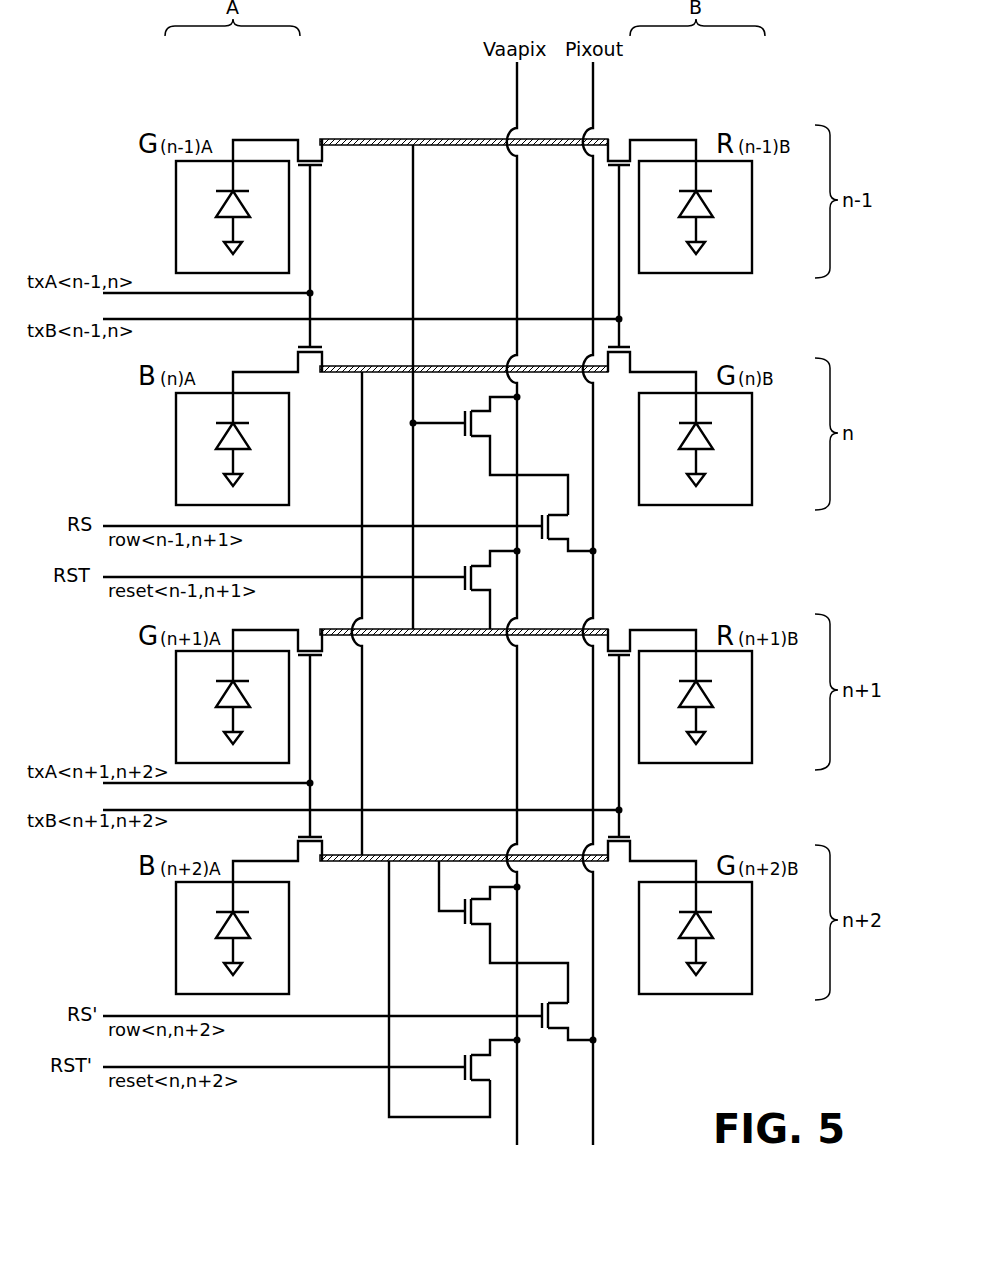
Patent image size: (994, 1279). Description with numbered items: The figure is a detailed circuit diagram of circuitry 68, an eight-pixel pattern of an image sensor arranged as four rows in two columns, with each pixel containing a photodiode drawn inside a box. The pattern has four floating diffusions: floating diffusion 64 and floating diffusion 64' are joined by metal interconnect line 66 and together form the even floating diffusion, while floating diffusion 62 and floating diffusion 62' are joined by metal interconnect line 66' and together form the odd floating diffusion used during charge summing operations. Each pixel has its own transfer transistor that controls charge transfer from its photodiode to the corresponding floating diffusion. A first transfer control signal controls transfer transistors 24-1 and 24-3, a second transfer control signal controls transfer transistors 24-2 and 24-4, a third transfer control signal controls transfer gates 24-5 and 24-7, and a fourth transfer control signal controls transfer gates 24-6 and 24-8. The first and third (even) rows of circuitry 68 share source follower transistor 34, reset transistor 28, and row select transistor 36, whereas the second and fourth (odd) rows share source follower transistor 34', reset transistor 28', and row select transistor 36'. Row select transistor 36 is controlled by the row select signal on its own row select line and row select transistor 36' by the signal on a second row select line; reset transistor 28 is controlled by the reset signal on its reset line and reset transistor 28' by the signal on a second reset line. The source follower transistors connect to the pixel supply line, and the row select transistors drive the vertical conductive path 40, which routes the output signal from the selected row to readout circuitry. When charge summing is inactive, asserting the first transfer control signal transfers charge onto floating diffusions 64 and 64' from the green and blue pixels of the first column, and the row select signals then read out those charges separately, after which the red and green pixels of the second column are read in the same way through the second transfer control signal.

The circuitry 68 is at (124, 79).
The vertical conductive path 40 is at (593, 93).
The transfer transistor 24-1 is at (310, 142).
The transfer transistor 24-2 is at (620, 140).
The transfer transistor 24-3 is at (299, 362).
The transfer transistor 24-4 is at (631, 362).
The transfer gate 24-5 is at (310, 632).
The transfer gate 24-6 is at (620, 630).
The transfer gate 24-7 is at (299, 847).
The transfer gate 24-8 is at (631, 847).
The floating diffusion 64 is at (464, 142).
The floating diffusion 64' is at (464, 356).
The floating diffusion 62 is at (464, 645).
The floating diffusion 62' is at (464, 844).
The metal interconnect line 66 is at (436, 387).
The metal interconnect line 66' is at (421, 744).
The source follower transistor 34 is at (489, 455).
The row select transistor 36 is at (566, 544).
The reset transistor 28 is at (482, 589).
The source follower transistor 34' is at (503, 932).
The row select transistor 36' is at (565, 1032).
The reset transistor 28' is at (480, 1070).